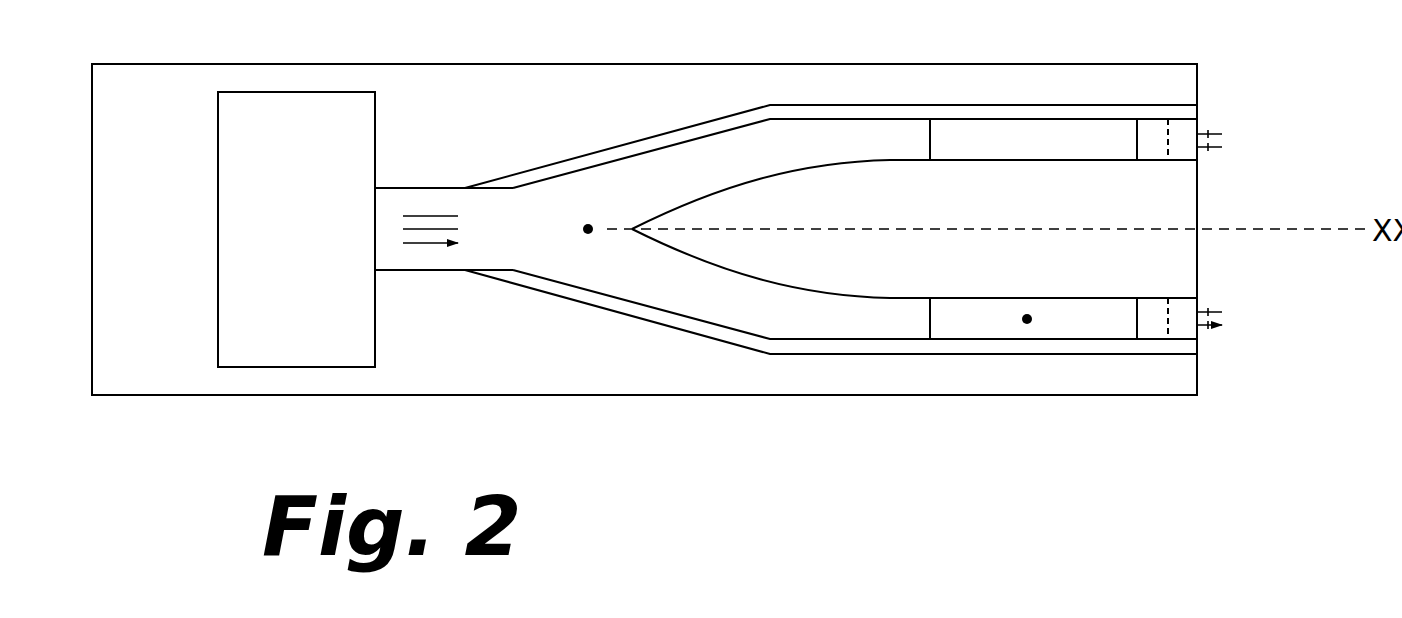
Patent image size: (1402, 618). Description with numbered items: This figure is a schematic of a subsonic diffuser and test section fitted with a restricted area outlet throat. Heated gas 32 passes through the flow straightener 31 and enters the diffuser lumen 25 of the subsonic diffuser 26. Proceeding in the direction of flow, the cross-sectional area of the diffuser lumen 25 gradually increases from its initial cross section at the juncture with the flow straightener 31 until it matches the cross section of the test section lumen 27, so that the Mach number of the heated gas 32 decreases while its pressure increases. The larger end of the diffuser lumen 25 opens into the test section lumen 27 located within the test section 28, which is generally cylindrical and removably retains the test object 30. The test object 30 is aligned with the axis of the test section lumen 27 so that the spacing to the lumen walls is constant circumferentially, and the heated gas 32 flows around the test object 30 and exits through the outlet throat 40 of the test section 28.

The diffuser lumen 25 is at (589, 224).
The subsonic diffuser 26 is at (669, 331).
The test section lumen 27 is at (1027, 319).
The test section 28 is at (900, 92).
The test object 30 is at (993, 209).
The flow straightener 31 is at (381, 226).
The heated gas 32 is at (451, 230).
The outlet throat 40 is at (1184, 139).